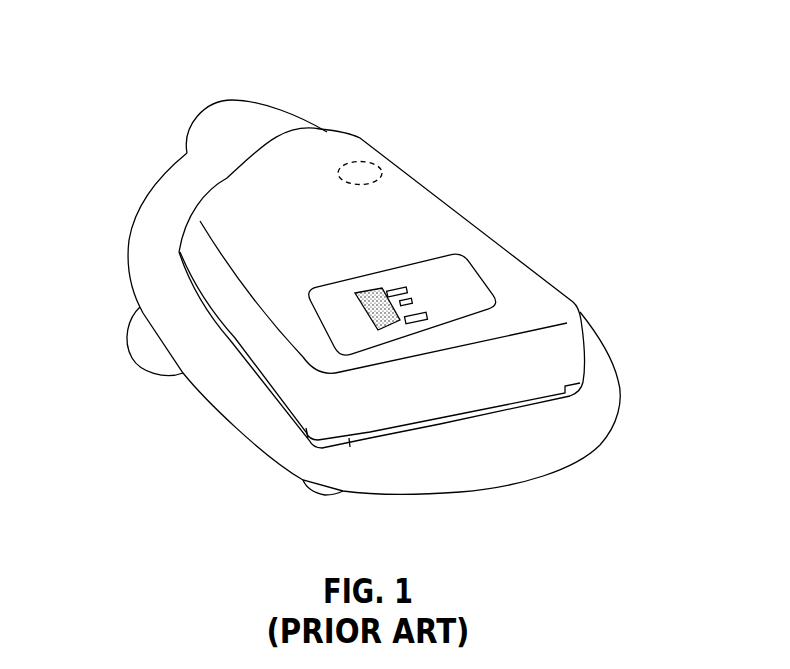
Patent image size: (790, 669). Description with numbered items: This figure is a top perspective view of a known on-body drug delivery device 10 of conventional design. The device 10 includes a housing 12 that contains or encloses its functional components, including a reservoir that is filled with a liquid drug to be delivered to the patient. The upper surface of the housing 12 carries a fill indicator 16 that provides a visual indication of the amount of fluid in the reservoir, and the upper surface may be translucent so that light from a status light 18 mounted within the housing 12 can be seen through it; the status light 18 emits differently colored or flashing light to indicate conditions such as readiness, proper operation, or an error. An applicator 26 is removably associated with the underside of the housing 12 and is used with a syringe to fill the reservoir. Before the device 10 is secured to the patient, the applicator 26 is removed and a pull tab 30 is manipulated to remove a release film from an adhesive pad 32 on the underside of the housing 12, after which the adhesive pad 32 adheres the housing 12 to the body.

The on-body device 10 is at (534, 203).
The housing 12 is at (540, 284).
The fill indicator 16 is at (362, 310).
The status light 18 is at (363, 160).
The applicator 26 is at (245, 110).
The pull tab 30 is at (140, 340).
The adhesive pad 32 is at (478, 477).